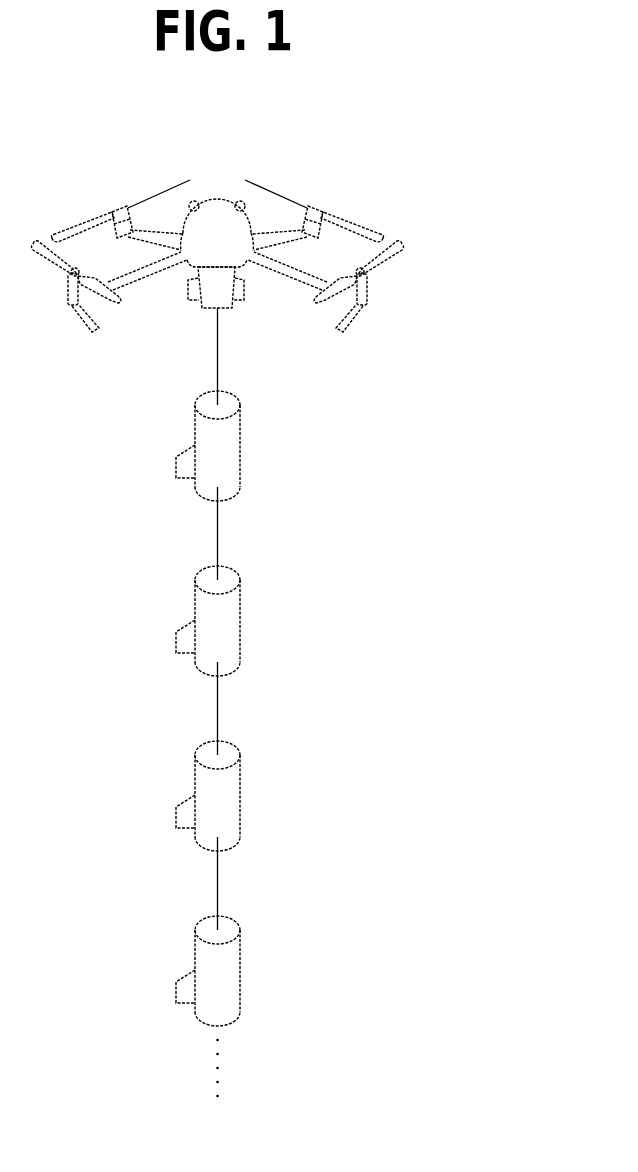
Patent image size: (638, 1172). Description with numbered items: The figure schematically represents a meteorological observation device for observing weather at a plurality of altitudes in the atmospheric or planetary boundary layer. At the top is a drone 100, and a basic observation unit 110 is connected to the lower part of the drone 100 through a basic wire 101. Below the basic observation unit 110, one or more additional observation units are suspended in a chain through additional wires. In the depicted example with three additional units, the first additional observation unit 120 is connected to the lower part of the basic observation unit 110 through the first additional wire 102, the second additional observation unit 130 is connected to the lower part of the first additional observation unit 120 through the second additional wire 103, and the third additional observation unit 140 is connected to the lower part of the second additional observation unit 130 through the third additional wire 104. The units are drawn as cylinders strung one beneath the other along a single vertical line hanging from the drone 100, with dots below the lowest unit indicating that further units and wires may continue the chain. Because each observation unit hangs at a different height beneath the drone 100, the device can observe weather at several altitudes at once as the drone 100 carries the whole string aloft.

The drone 100 is at (392, 255).
The basic wire 101 is at (218, 356).
The 1-st additional wire 102 is at (218, 538).
The 2-nd additional wire 103 is at (218, 720).
The 3-rd additional wire 104 is at (218, 895).
The basic observation unit 110 is at (240, 445).
The 1-st additional observation unit 120 is at (240, 618).
The 2-nd additional observation unit 130 is at (240, 795).
The 3-rd additional observation unit 140 is at (240, 967).